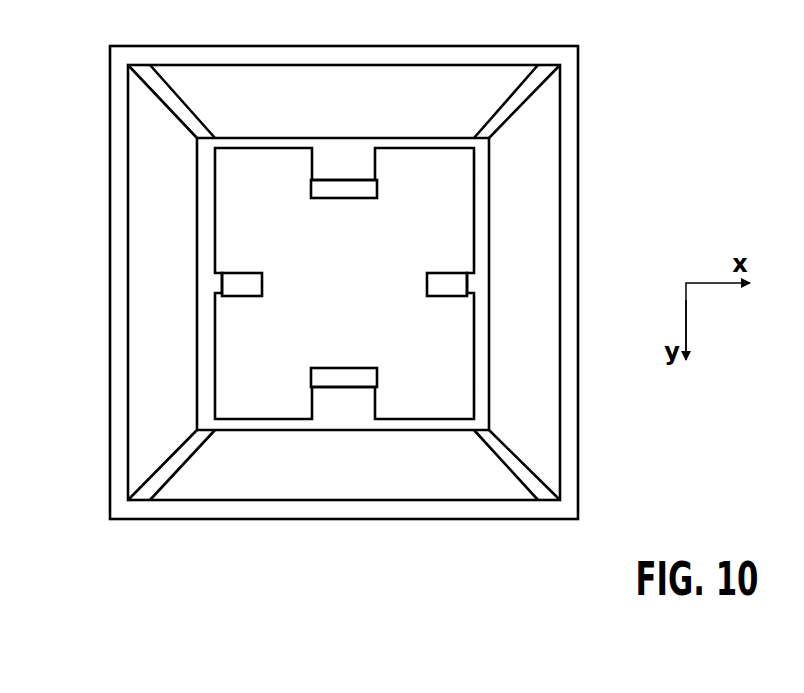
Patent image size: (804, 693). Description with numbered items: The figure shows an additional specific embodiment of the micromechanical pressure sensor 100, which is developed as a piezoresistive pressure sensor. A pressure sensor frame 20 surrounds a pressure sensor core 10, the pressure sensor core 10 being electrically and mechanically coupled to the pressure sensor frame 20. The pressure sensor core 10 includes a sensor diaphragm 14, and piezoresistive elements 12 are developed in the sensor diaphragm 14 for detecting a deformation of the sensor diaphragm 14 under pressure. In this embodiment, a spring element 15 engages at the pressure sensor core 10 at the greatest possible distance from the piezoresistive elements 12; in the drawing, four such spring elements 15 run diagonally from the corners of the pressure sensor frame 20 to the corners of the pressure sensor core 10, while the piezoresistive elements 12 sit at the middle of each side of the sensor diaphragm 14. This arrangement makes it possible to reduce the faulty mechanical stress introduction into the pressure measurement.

The micromechanical pressure sensor 100 is at (357, 331).
The pressure sensor frame 20 is at (578, 215).
The pressure sensor core 10 is at (197, 243).
The sensor diaphragm 14 is at (333, 298).
The spring element 15 is at (180, 121).
The piezoresistive elements 12 is at (311, 188).